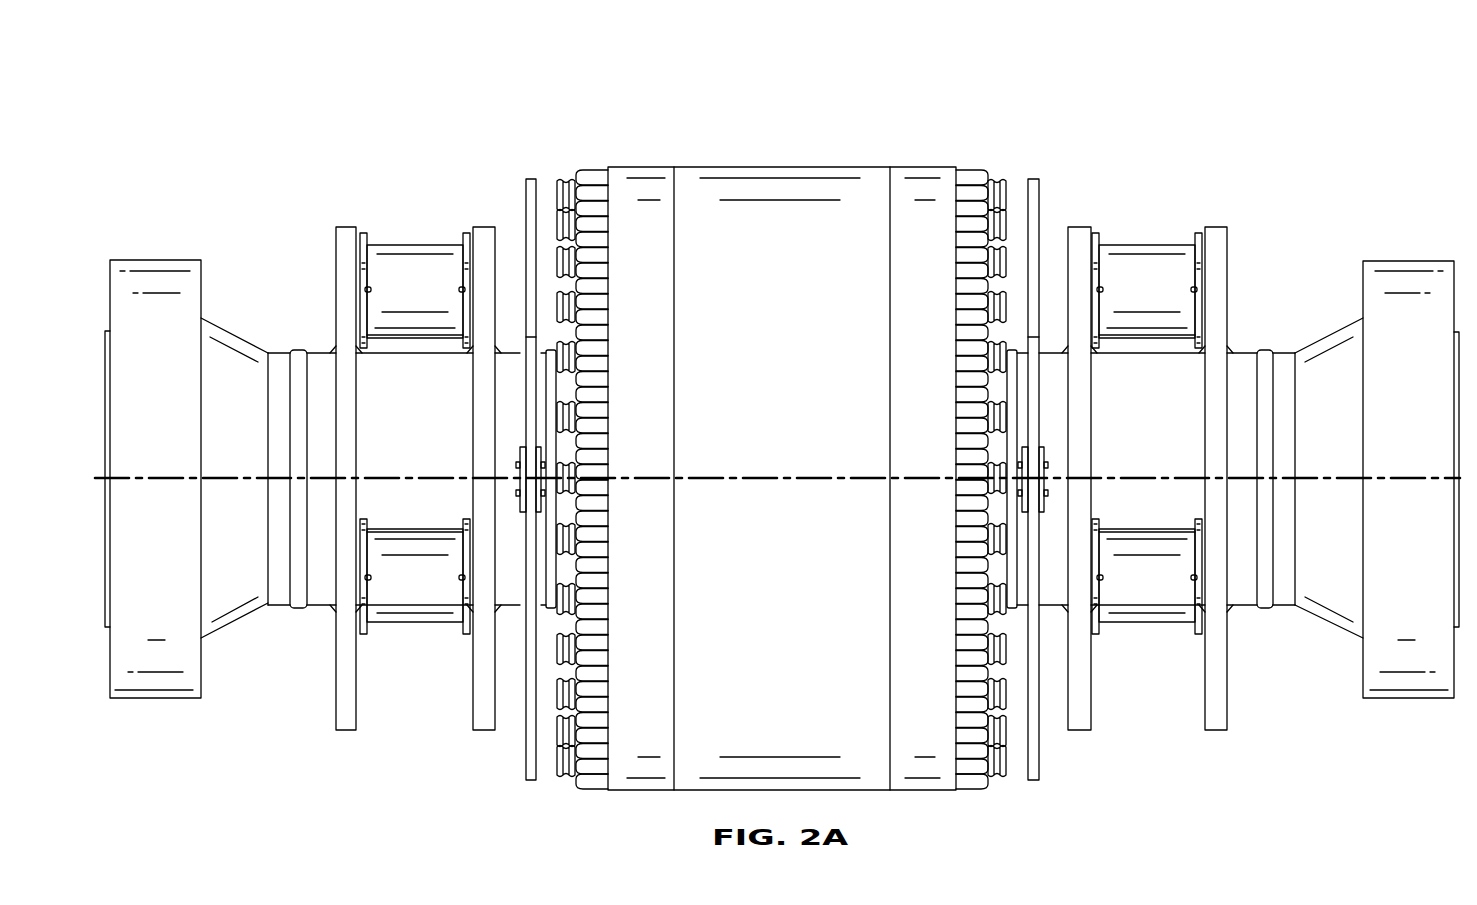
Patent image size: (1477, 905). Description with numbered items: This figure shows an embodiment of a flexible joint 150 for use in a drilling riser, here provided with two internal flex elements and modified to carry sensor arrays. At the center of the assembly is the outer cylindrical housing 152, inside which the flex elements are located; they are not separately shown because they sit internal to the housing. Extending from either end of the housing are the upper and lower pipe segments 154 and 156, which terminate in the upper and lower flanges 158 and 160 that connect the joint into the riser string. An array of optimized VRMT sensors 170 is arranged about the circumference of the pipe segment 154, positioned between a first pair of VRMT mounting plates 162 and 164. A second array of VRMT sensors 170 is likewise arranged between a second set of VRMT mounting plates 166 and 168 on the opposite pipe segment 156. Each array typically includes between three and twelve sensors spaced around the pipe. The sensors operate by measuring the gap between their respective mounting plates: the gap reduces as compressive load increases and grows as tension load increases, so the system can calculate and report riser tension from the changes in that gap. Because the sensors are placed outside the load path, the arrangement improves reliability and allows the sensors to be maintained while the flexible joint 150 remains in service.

The flexible joint 150 is at (437, 86).
The outer cylindrical housing 152 is at (784, 166).
The upper pipe segment 154 is at (1250, 350).
The lower pipe segment 156 is at (281, 350).
The upper flange 158 is at (1408, 700).
The lower flange 160 is at (152, 700).
The VRMT mounting plate 162 is at (1078, 732).
The VRMT mounting plate 164 is at (1215, 732).
The VRMT mounting plate 166 is at (346, 732).
The VRMT mounting plate 168 is at (484, 732).
The VRMT sensor 170 is at (405, 245).